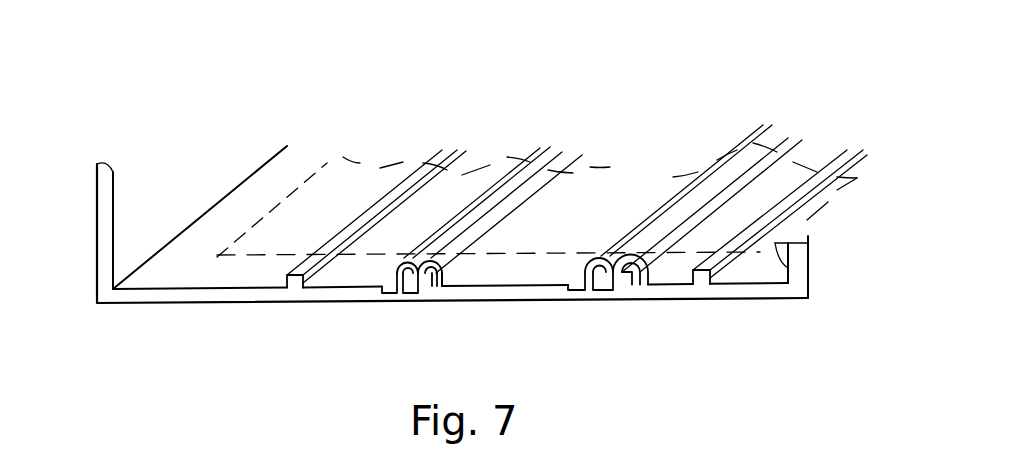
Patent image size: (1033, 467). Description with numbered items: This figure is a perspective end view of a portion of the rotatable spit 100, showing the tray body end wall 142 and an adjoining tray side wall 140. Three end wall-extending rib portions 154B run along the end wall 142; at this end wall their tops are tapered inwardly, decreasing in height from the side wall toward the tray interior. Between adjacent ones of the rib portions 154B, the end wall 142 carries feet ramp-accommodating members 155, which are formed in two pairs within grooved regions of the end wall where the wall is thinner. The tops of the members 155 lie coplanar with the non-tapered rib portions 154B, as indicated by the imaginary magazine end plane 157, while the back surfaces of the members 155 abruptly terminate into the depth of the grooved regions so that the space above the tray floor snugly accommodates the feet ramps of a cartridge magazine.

The cable management assembly 100 is at (229, 83).
The tray side wall 140 is at (97, 257).
The tray body end wall 142 is at (235, 300).
The end wall-extending rib portion 154B is at (437, 155).
The feet ramp-accommodating member 155 is at (435, 273).
The imaginary magazine end plane 157 is at (808, 301).